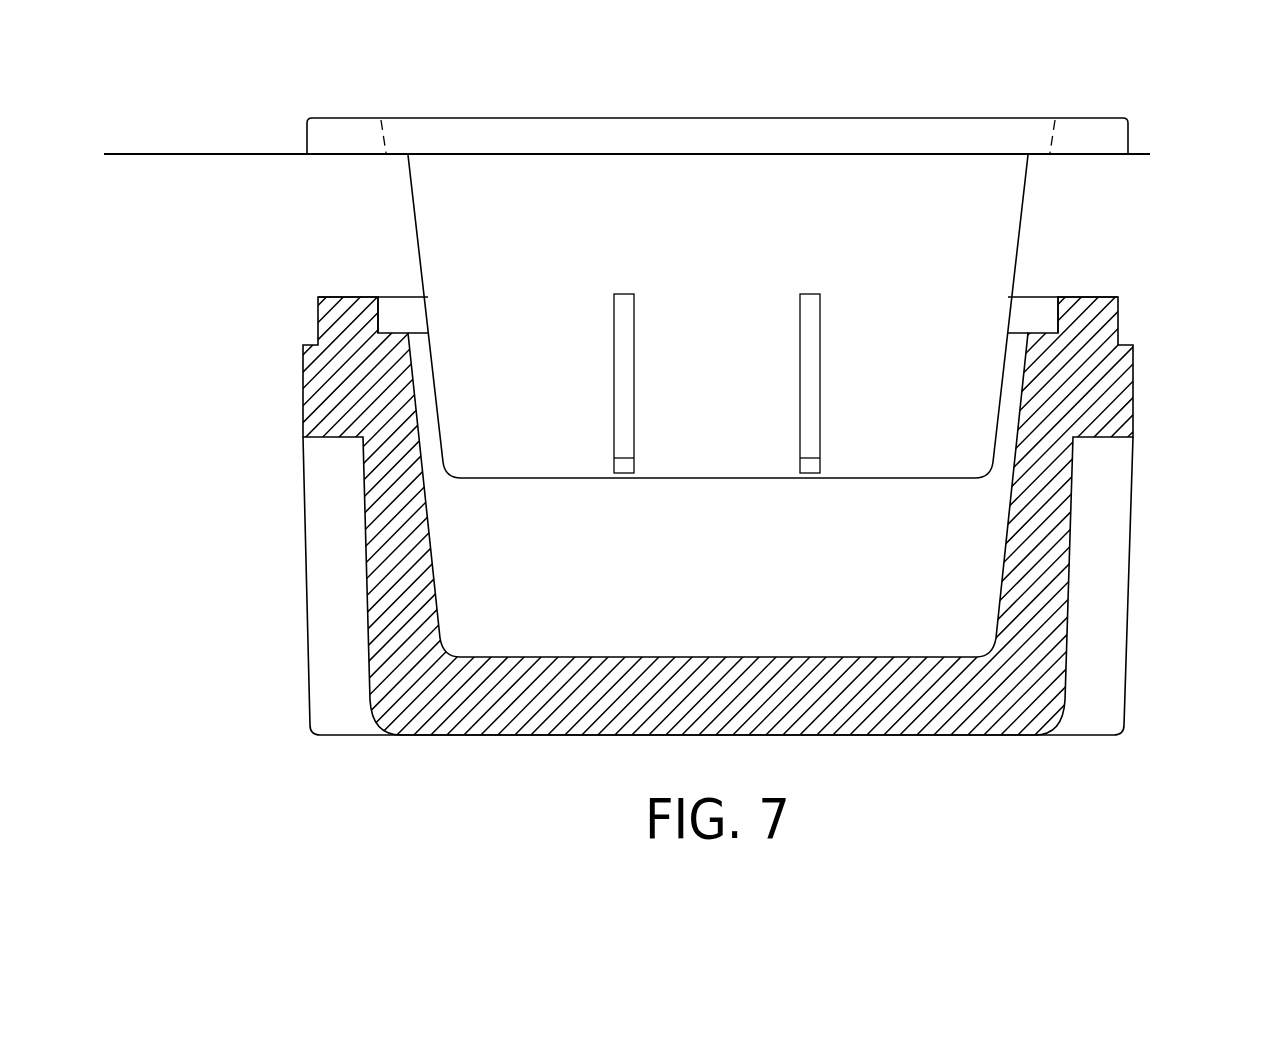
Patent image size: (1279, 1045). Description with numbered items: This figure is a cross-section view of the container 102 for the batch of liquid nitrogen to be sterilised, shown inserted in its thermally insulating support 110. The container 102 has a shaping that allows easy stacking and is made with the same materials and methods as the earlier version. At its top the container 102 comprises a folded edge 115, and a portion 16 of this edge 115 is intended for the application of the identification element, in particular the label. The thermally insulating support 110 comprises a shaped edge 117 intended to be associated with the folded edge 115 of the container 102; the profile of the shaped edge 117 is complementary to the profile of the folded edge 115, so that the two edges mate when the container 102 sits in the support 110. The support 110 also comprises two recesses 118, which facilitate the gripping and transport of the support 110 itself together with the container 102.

The portion of the edge 16 is at (140, 154).
The container 102 is at (755, 239).
The thermally insulating support 110 is at (1097, 392).
The folded edge 115 is at (310, 118).
The shaped edge 117 is at (337, 302).
The recesses 118 is at (340, 514).